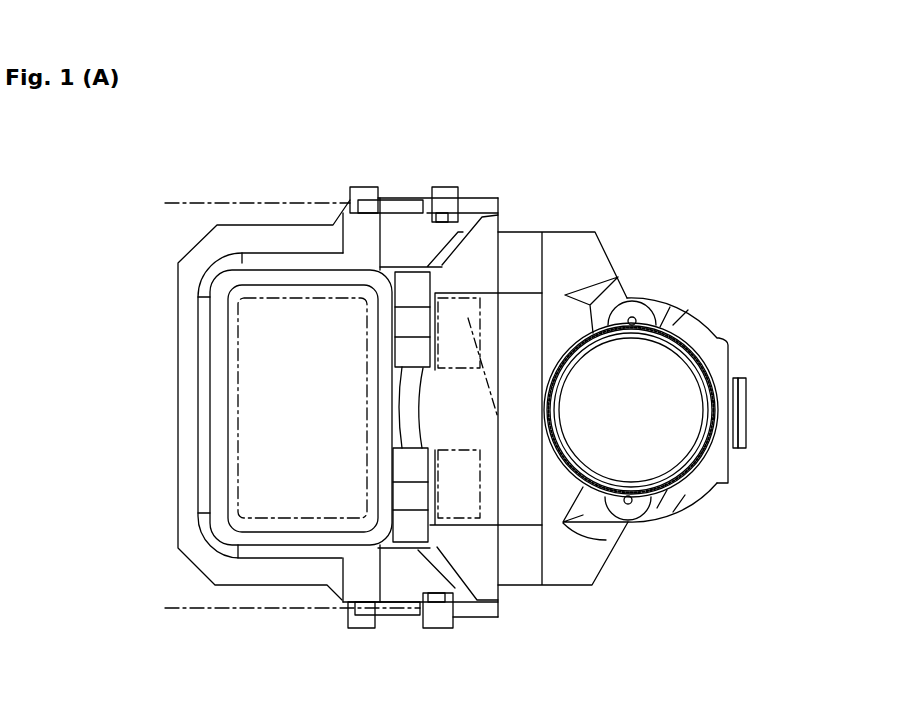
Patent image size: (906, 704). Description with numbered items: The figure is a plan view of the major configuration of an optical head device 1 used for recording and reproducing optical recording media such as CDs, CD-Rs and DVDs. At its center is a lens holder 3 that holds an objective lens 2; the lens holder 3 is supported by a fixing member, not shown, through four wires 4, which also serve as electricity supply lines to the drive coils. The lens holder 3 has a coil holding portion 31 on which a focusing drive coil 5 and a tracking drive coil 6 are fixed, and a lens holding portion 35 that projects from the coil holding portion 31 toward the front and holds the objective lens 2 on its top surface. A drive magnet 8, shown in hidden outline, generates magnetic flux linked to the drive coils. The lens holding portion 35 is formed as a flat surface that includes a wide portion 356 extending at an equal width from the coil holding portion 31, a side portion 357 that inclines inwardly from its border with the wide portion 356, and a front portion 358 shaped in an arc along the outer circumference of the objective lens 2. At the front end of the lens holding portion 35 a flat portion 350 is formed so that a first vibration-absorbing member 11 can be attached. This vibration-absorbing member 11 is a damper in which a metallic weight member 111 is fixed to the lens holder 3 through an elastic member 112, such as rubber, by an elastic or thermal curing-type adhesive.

The optical head device 1 is at (657, 243).
The objective lens 2 is at (647, 378).
The lens holder 3 is at (563, 145).
The coil holding portion 31 is at (337, 247).
The lens holding portion 35 is at (558, 227).
The wires 4 is at (207, 196).
The focusing drive coil 5 is at (232, 336).
The tracking drive coil 6 is at (402, 460).
The drive magnet 8 is at (463, 447).
The first vibration-absorbing member 11 is at (796, 400).
The metallic weight member 111 is at (742, 417).
The elastic member 112 is at (735, 392).
The flat portion 350 is at (730, 360).
The wide portion 356 is at (587, 600).
The side portion 357 is at (638, 533).
The front portion 358 is at (738, 495).